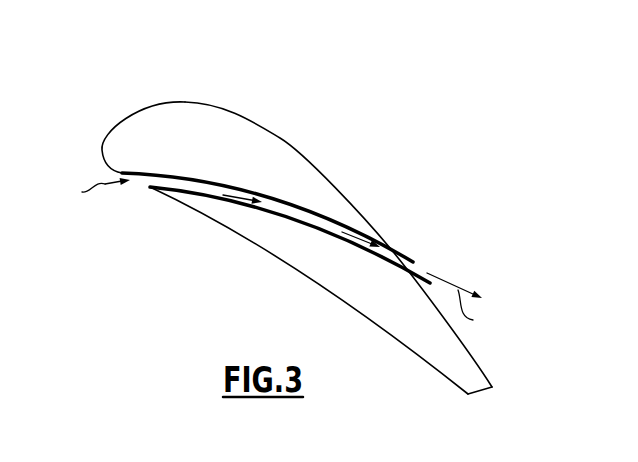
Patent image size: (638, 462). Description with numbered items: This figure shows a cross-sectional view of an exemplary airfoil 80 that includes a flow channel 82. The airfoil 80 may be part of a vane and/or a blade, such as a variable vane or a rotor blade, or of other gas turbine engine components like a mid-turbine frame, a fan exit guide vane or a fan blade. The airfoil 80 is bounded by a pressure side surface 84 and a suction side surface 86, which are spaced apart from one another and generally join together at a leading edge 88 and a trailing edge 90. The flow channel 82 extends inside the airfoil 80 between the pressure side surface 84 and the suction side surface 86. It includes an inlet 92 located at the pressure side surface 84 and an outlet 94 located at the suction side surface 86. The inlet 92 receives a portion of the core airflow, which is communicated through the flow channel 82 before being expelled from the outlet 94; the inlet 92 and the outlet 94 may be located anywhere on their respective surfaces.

The airfoil 80 is at (290, 233).
The flow channel 82 is at (270, 197).
The pressure side surface 84 is at (280, 258).
The suction side surface 86 is at (343, 200).
The leading edge 88 is at (102, 150).
The trailing edge 90 is at (492, 387).
The inlet 92 is at (134, 197).
The outlet 94 is at (430, 266).